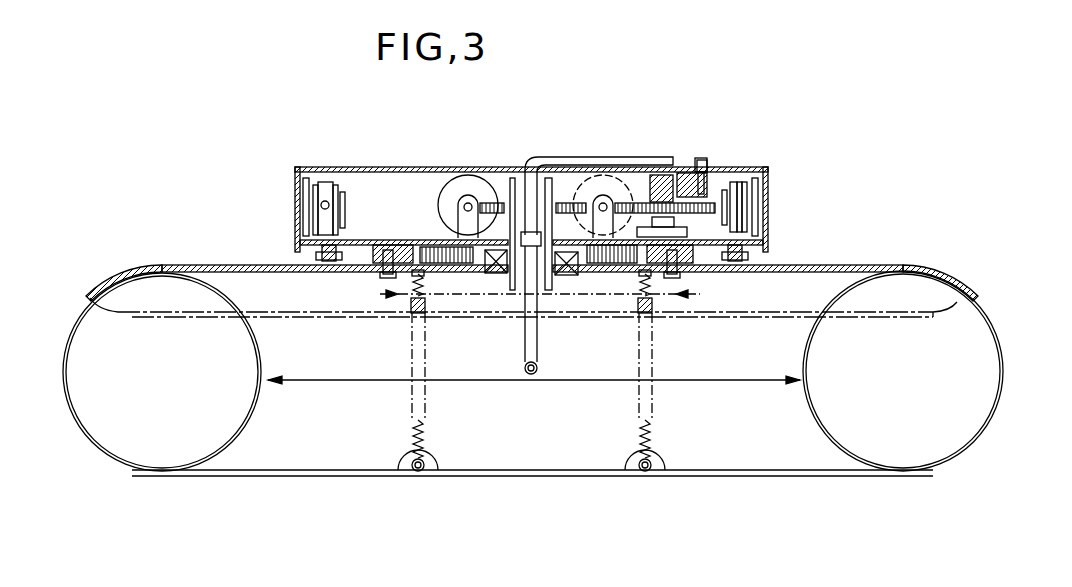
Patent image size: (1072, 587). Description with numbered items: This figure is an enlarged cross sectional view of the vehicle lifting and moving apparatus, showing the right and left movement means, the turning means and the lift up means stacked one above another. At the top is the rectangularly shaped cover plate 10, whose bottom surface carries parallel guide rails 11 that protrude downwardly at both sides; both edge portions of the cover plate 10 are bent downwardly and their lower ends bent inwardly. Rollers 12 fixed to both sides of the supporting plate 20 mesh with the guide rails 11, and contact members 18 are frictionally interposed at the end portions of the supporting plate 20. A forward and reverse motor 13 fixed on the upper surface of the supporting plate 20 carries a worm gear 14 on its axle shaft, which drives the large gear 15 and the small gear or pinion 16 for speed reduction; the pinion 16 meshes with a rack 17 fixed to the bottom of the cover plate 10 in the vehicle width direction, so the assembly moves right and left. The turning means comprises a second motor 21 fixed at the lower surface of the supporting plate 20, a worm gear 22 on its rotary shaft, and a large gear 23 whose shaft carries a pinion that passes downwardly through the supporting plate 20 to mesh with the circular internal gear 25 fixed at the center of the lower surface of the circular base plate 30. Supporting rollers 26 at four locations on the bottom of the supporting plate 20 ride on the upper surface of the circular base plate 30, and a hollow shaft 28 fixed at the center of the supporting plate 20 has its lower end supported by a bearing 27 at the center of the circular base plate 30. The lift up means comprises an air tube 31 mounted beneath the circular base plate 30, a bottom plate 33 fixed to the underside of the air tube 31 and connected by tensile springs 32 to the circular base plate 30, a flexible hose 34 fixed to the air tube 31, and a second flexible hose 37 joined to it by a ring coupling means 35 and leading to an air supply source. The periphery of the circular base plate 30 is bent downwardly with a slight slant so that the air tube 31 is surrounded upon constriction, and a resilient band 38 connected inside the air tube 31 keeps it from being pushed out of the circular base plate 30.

The cover plate 10 is at (402, 168).
The guide rails 11 is at (327, 172).
The rollers 12 is at (304, 172).
The motor 13 is at (598, 180).
The worm gear 14 is at (625, 195).
The large gear 15 is at (645, 225).
The small gear (pinion) 16 is at (685, 185).
The rack 17 is at (701, 160).
The contact member 18 is at (305, 255).
The supporting plate 20 is at (364, 245).
The motor 21 is at (455, 180).
The worm gear 22 is at (464, 198).
The large gear 23 is at (492, 203).
The circular internal gear 25 is at (423, 250).
The supporting rollers 26 is at (330, 264).
The bearing 27 is at (570, 277).
The hollow shaft 28 is at (553, 180).
The circular base plate 30 is at (878, 268).
The air tube 31 is at (1000, 392).
The tensile springs 32 is at (436, 468).
The bottom plate 33 is at (548, 477).
The flexible hose 34 is at (530, 364).
The ring coupling means 35 is at (527, 354).
The flexible hose 37 is at (540, 158).
The resilient band 38 is at (720, 386).